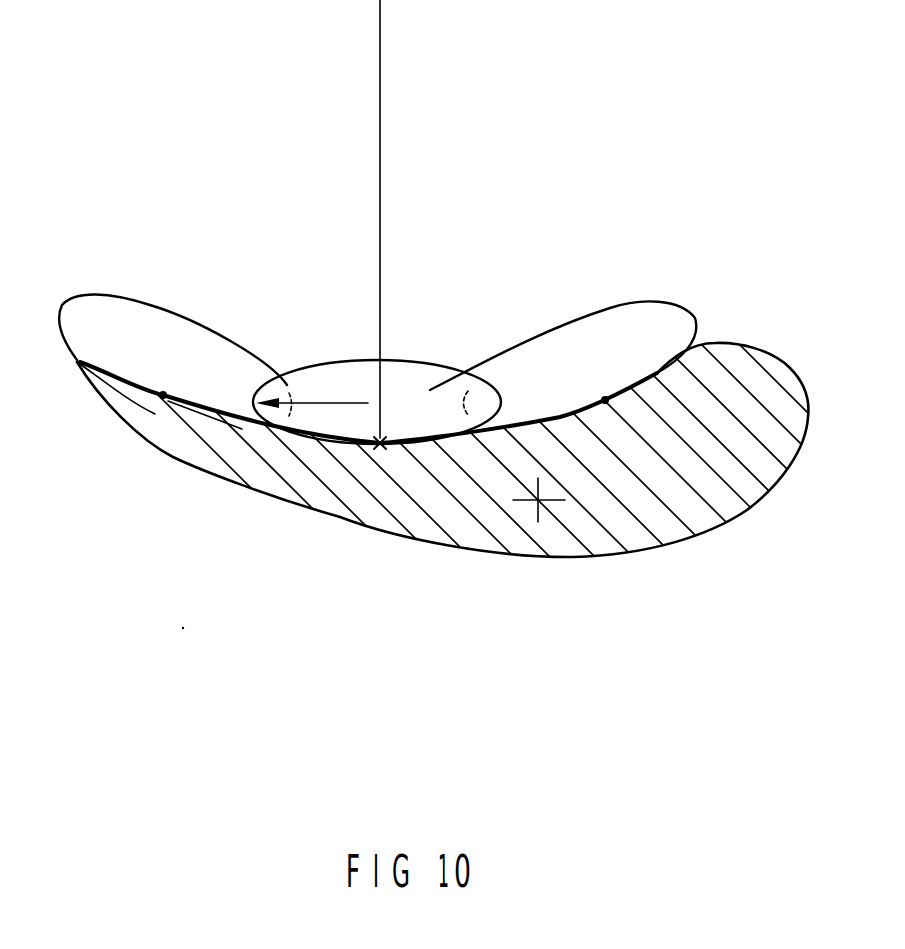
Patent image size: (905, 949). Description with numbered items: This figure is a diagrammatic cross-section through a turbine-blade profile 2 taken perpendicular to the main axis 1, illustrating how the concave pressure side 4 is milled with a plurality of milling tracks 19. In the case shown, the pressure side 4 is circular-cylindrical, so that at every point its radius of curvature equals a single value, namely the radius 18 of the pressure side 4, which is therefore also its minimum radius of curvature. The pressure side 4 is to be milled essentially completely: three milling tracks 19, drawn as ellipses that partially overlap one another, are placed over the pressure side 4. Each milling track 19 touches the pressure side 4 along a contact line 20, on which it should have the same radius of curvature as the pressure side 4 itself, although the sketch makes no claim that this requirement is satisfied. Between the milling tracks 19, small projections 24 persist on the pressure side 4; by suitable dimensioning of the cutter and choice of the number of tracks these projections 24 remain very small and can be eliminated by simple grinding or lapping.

The main axis 1 is at (539, 501).
The turbine-blade profile 2 is at (688, 505).
The pressure side 4 is at (243, 433).
The radius 18 is at (380, 33).
The milling tracks 19 is at (118, 322).
The contact line 20 is at (165, 394).
The projections 24 is at (270, 432).